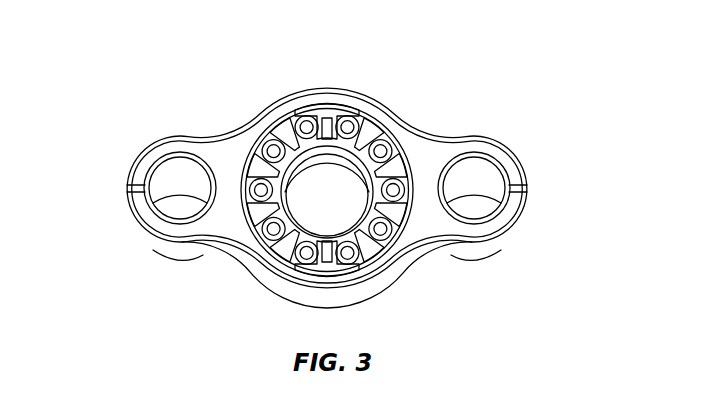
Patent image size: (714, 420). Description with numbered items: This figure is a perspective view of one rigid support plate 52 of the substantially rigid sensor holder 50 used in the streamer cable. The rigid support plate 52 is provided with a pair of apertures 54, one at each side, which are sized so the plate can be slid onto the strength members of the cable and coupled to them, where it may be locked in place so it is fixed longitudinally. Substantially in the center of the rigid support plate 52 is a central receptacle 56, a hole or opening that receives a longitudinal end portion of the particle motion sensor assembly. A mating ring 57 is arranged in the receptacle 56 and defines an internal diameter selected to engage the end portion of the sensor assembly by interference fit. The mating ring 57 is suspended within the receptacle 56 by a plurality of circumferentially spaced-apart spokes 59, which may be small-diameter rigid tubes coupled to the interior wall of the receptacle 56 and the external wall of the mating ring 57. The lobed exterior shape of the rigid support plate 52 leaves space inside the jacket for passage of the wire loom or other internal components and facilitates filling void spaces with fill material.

The rigid sensor holder 50 is at (480, 312).
The rigid support plate 52 is at (310, 98).
The aperture 54 is at (170, 172).
The central receptacle 56 is at (283, 240).
The mating ring 57 is at (328, 140).
The spokes 59 is at (383, 148).